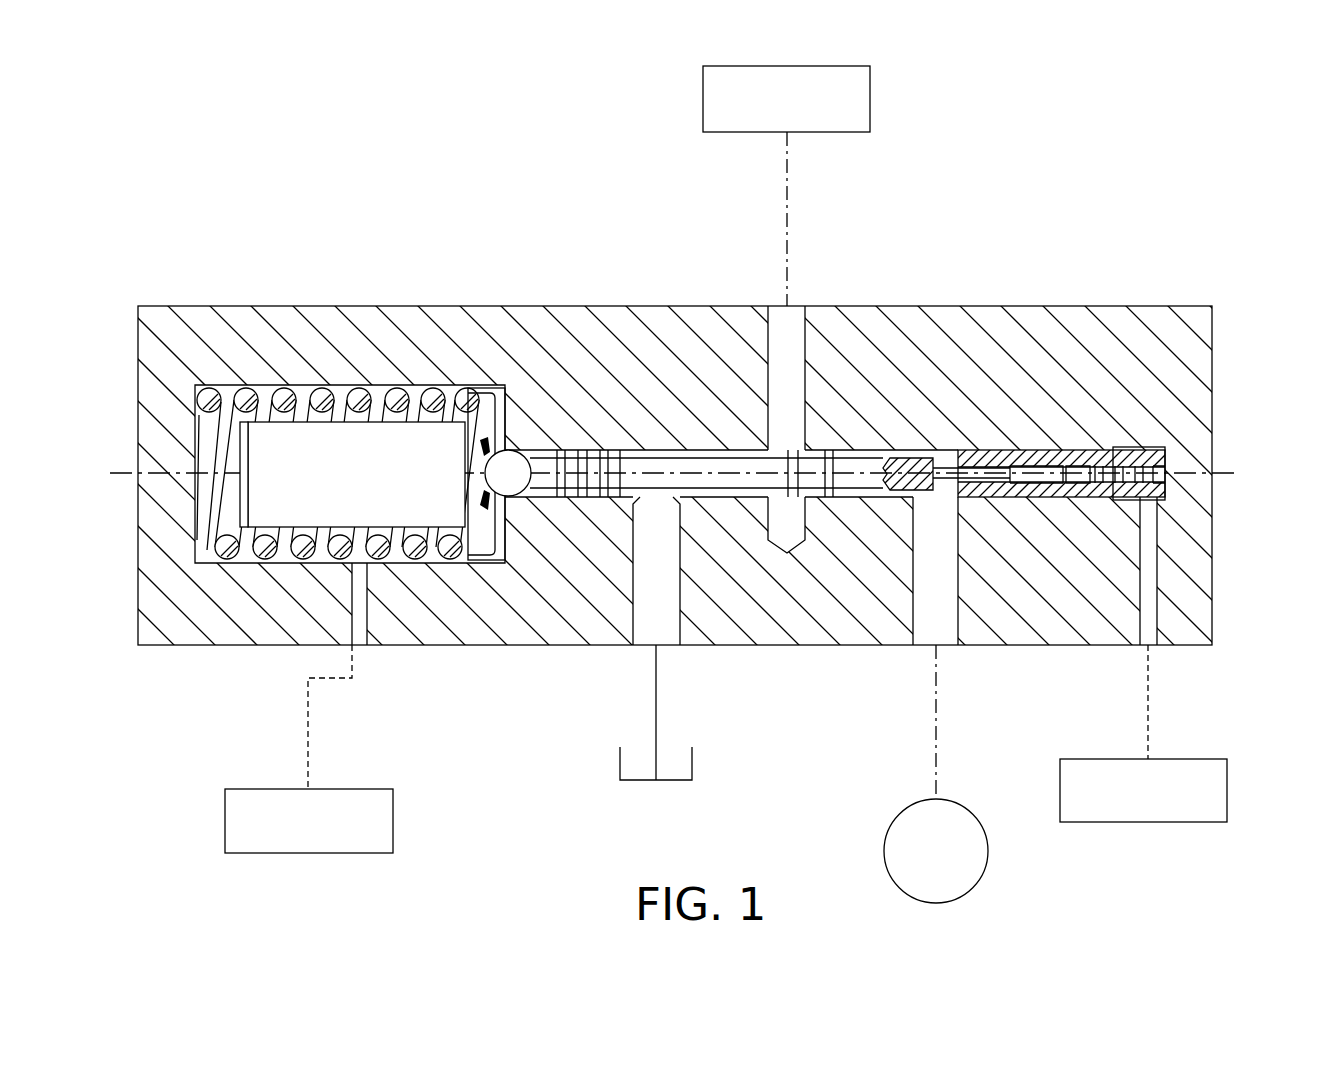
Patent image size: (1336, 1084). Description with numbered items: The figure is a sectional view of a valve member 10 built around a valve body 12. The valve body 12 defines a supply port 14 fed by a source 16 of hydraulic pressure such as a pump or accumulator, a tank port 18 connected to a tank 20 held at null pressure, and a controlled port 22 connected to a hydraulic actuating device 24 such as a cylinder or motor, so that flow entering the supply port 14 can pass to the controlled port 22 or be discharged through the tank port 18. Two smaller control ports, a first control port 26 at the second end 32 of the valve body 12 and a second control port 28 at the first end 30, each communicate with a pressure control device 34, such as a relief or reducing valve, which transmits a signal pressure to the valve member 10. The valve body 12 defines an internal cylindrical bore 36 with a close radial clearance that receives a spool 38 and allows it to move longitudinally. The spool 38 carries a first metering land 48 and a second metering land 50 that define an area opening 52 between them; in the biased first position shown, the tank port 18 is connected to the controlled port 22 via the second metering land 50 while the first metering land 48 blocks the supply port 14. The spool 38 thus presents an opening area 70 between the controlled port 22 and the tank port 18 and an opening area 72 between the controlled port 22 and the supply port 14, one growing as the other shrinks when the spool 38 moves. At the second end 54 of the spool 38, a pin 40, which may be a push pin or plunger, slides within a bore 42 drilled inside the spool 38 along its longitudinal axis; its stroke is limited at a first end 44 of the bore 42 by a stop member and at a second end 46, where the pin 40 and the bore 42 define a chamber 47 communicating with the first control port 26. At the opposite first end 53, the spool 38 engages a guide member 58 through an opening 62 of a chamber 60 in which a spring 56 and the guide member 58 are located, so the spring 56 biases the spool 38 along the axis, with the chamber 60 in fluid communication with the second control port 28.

The valve member 10 is at (152, 162).
The valve body 12 is at (1092, 340).
The supply port 14 is at (943, 607).
The source of hydraulic pressure 16 is at (956, 855).
The tank port 18 is at (650, 593).
The tank 20 is at (692, 760).
The controlled port 22 is at (790, 306).
The hydraulic actuating device 24 is at (870, 100).
The first control port 26 is at (1148, 627).
The second control port 28 is at (360, 628).
The first end of the valve body 30 is at (176, 628).
The second end of the valve body 32 is at (1206, 574).
The pressure control device 34 is at (393, 820).
The cylindrical bore 36 is at (637, 448).
The spool 38 is at (698, 470).
The pin 40 is at (1165, 470).
The bore of the spool 42 is at (1130, 450).
The first end of the bore 44 is at (1043, 472).
The second end of the bore 46 is at (1170, 475).
The chamber 47 is at (1170, 480).
The first metering land 48 is at (850, 470).
The second metering land 50 is at (770, 462).
The area opening 52 is at (822, 497).
The first end of the spool 53 is at (512, 512).
The second end of the spool 54 is at (1085, 506).
The spring 56 is at (338, 391).
The guide member 58 is at (357, 432).
The chamber 60 is at (287, 562).
The opening of the chamber 62 is at (498, 440).
The opening area 70 is at (707, 484).
The opening area 72 is at (870, 494).